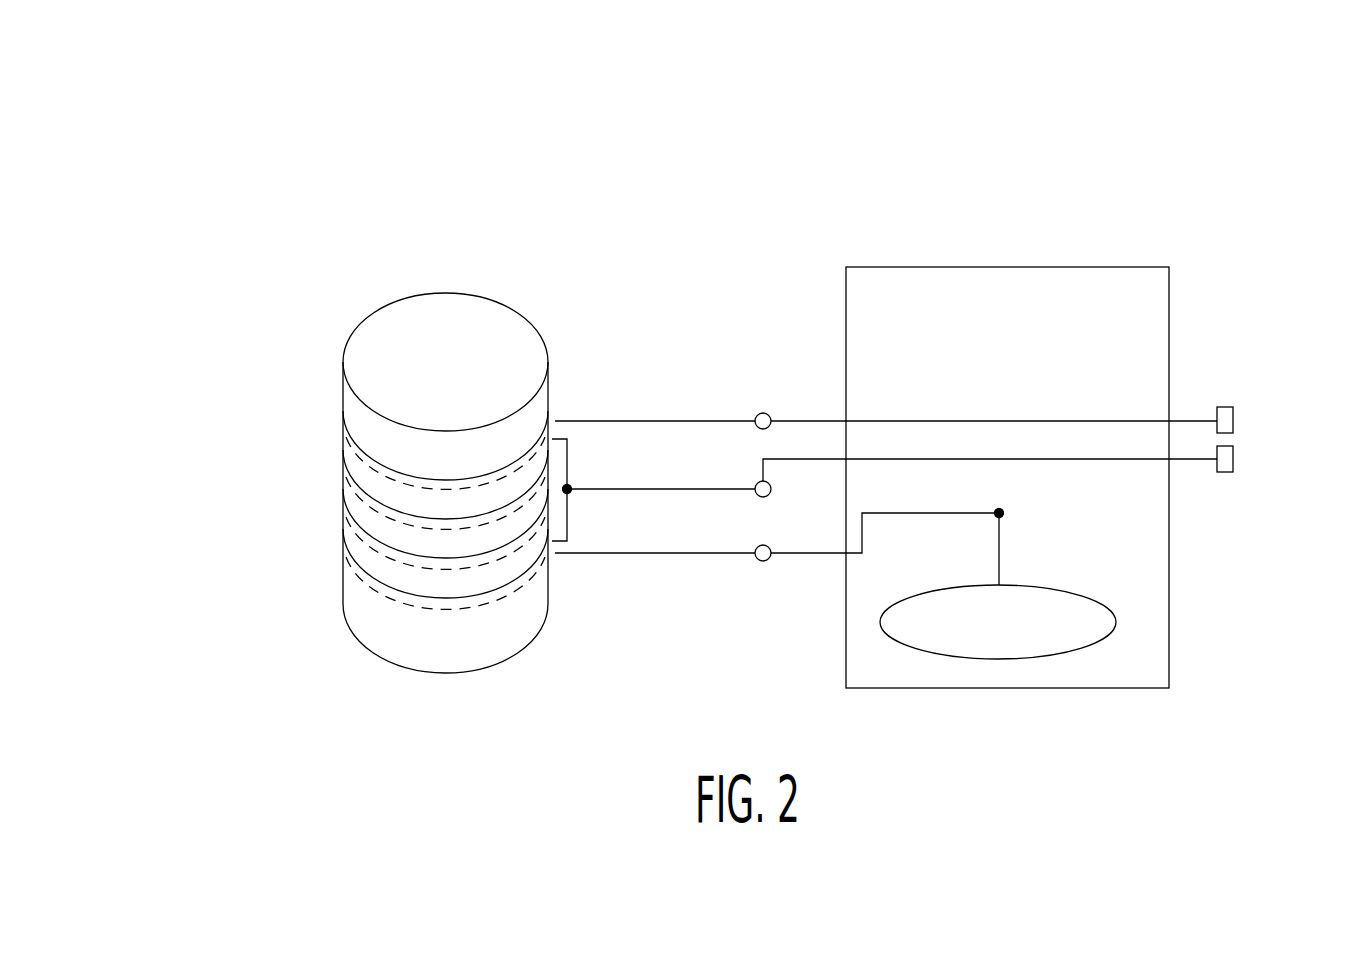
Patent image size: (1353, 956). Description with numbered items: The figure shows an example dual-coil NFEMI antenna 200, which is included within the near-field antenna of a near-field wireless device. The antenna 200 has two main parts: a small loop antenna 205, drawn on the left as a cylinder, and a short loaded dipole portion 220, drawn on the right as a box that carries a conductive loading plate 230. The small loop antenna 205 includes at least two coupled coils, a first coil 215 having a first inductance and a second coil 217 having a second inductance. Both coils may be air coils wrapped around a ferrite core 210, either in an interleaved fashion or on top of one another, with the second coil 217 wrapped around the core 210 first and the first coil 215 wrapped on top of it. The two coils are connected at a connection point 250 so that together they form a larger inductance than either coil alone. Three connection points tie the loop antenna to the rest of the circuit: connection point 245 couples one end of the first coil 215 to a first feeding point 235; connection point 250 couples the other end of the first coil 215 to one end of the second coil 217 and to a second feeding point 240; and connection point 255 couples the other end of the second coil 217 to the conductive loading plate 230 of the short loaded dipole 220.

The dual-coil NFEMI antenna 200 is at (228, 120).
The small loop antenna 205 is at (385, 214).
The ferrite core 210 is at (352, 332).
The first coil 215 is at (376, 461).
The second coil 217 is at (380, 602).
The short loaded dipole portion 220 is at (1076, 267).
The conductive loading plate 230 is at (1115, 613).
The first feeding point 235 is at (1233, 421).
The second feeding point 240 is at (1233, 459).
The connection point 245 is at (763, 413).
The connection point 250 is at (771, 489).
The connection point 255 is at (763, 561).